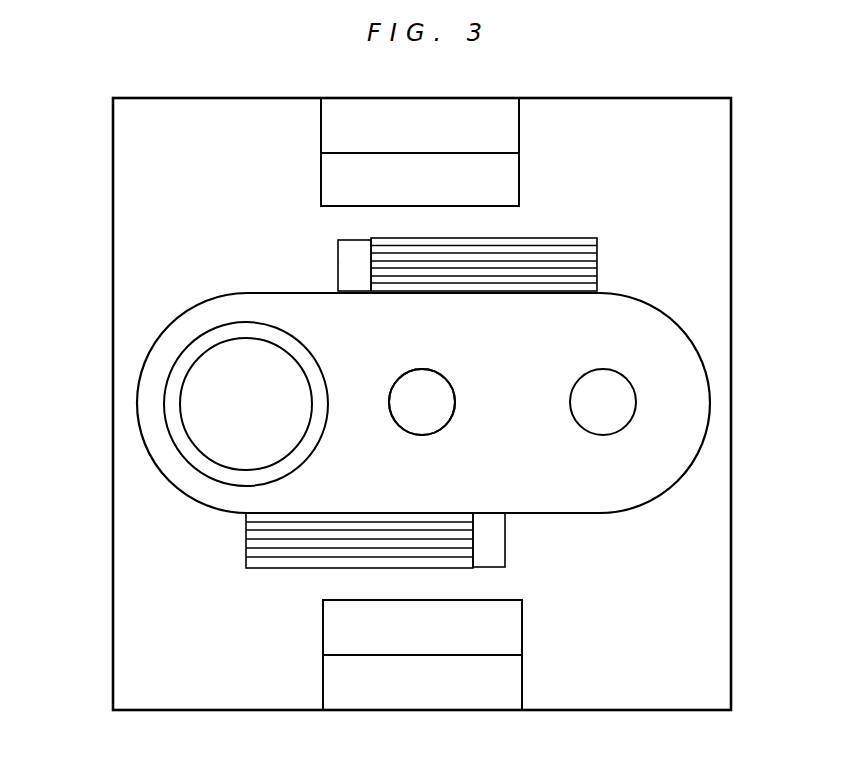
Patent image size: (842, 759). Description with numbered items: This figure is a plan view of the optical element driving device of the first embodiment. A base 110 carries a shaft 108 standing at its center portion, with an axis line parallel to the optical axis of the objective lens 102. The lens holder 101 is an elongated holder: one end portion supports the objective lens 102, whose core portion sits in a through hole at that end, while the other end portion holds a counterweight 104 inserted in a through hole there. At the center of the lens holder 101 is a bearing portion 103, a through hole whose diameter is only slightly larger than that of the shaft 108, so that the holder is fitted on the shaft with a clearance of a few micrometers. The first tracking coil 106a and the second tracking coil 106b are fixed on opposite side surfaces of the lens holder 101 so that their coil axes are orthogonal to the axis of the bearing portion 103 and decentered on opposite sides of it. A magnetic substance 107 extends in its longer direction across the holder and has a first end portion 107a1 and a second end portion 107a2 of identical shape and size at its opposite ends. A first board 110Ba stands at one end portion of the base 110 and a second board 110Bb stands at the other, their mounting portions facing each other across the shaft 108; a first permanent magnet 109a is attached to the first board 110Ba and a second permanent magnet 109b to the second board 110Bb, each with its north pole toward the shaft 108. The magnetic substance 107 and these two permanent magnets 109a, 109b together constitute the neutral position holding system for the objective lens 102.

The lens holder 101 is at (657, 323).
The objective lens 102 is at (192, 400).
The bearing portion 103 is at (423, 436).
The counterweight 104 is at (600, 382).
The first tracking coil 106a is at (563, 248).
The second tracking coil 106b is at (282, 560).
The magnetic substance 107 is at (338, 283).
The first end portion 107a1 is at (338, 262).
The second end portion 107a2 is at (505, 550).
The shaft 108 is at (424, 380).
The first permanent magnet 109a is at (519, 169).
The second permanent magnet 109b is at (515, 627).
The base 110 is at (724, 401).
The first board 110Ba is at (519, 131).
The second board 110Bb is at (515, 683).